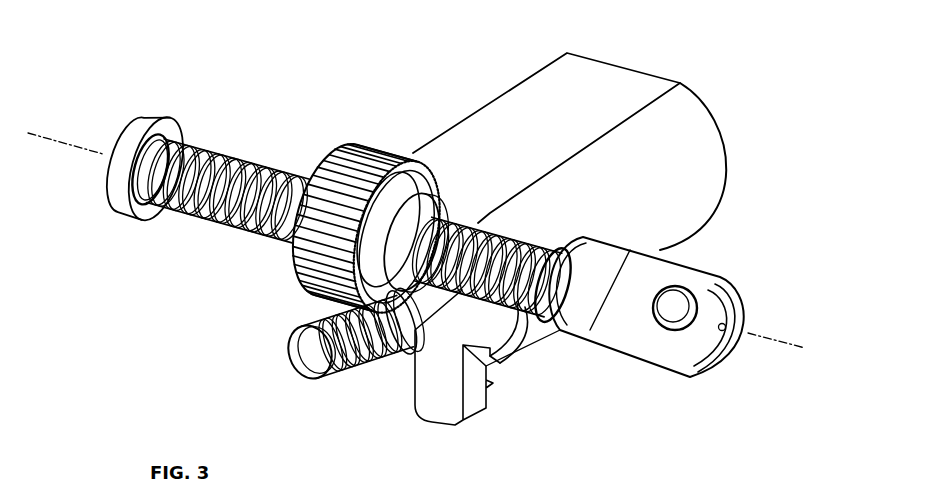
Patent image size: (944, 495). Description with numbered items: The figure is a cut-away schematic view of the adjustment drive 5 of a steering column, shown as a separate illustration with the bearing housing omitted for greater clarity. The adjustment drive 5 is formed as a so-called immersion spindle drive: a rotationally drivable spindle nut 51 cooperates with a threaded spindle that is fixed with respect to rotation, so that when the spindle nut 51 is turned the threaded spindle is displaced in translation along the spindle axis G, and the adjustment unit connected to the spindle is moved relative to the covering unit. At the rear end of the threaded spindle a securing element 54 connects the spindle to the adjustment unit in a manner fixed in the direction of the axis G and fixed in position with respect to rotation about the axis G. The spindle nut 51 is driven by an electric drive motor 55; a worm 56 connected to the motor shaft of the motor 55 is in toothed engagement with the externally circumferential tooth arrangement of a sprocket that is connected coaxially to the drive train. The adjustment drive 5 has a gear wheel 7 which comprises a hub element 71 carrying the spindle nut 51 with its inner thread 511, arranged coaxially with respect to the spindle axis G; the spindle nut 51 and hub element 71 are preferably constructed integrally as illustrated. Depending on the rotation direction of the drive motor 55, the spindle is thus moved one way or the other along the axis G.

The adjustment drive 5 is at (406, 66).
The gear wheel 7 is at (330, 126).
The hub element 71 is at (381, 150).
The spindle nut 51 is at (425, 168).
The inner thread 511 is at (408, 335).
The securing element 54 is at (700, 268).
The electric drive motor 55 is at (605, 88).
The worm 56 is at (381, 345).
The spindle axis G is at (808, 348).